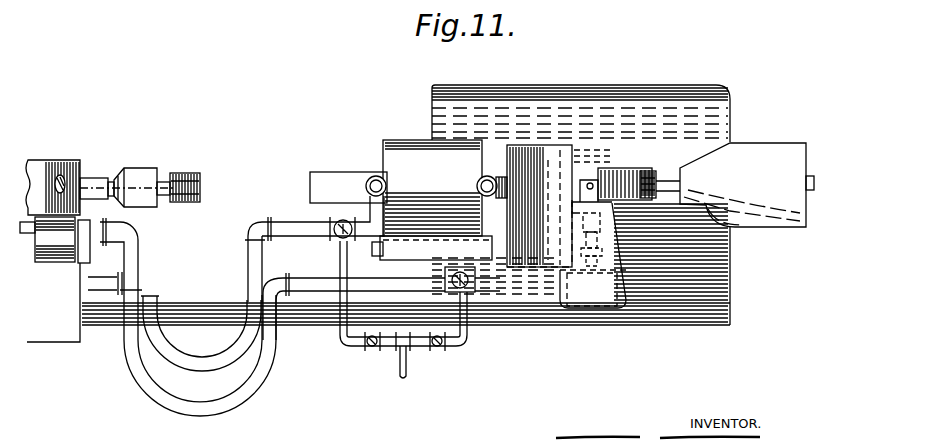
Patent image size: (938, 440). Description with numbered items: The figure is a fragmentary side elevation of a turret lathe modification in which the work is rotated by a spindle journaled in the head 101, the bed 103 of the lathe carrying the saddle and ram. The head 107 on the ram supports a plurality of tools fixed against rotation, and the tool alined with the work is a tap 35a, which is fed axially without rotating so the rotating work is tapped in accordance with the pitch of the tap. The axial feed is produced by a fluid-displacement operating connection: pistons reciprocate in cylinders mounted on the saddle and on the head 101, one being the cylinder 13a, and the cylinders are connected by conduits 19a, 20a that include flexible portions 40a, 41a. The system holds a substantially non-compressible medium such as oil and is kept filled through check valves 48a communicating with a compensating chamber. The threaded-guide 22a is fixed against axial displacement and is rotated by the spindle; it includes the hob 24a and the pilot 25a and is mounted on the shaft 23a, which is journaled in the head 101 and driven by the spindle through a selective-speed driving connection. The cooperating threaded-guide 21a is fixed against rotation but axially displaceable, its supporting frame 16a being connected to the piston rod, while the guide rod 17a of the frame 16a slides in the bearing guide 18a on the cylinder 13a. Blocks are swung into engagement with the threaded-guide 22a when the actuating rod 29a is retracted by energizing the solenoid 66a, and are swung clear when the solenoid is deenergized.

The head 101 is at (658, 96).
The bed 103 is at (176, 312).
The head 107 is at (65, 168).
The tap 35a is at (188, 180).
The flexible portion 40a is at (266, 375).
The flexible portion 41a is at (181, 362).
The conduit 20a is at (288, 232).
The conduit 19a is at (325, 262).
The check valve 48a is at (372, 346).
The cylinder 13a is at (398, 153).
The bearing guide 18a is at (436, 248).
The guide rod 17a is at (378, 250).
The supporting frame 16a is at (520, 148).
The solenoid 66a is at (580, 292).
The threaded-guide 21a is at (589, 180).
The threaded-guide 22a is at (637, 153).
The actuating rod 29a is at (595, 262).
The pilot 25a is at (614, 168).
The hob 24a is at (655, 169).
The shaft 23a is at (675, 182).